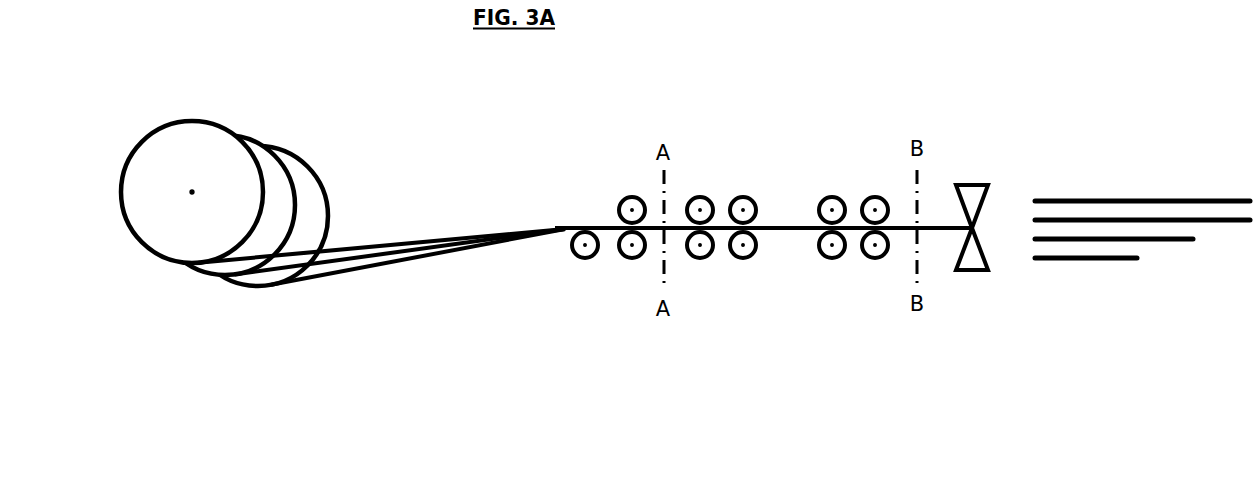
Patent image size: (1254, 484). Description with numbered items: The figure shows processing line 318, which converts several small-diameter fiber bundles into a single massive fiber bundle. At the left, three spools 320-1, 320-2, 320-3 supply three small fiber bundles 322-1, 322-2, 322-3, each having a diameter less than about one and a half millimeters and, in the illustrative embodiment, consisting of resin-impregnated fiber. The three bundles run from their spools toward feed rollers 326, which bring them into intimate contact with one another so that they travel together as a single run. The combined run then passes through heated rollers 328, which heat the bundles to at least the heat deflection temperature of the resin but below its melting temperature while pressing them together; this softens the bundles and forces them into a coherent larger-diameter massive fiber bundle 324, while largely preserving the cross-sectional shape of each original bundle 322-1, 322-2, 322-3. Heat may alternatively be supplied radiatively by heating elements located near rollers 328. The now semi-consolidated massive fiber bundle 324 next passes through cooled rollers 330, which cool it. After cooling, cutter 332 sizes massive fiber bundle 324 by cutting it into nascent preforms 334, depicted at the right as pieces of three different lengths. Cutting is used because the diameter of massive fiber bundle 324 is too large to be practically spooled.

The processing line 318 is at (931, 82).
The spool 320-1 is at (195, 164).
The spool 320-2 is at (262, 153).
The spool 320-3 is at (328, 200).
The small fiber bundle 322-1 is at (412, 240).
The small fiber bundle 322-2 is at (382, 255).
The small fiber bundle 322-3 is at (467, 251).
The massive fiber bundle 324 is at (787, 232).
The feed rollers 326 is at (598, 201).
The heated rollers 328 is at (758, 183).
The cooled rollers 330 is at (890, 183).
The cutter 332 is at (977, 185).
The nascent preforms 334 is at (1137, 194).